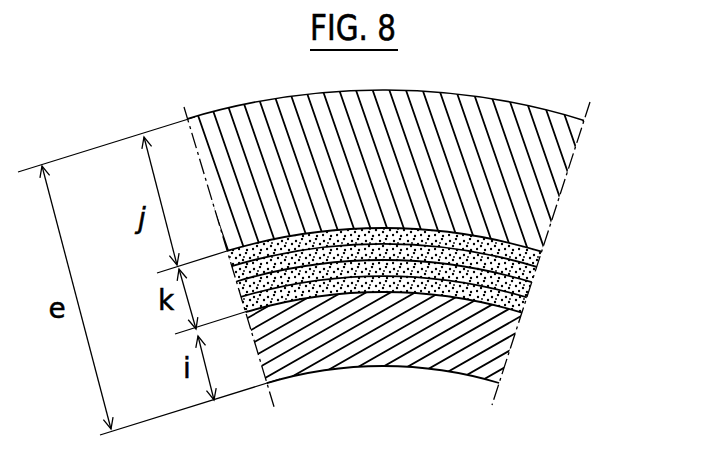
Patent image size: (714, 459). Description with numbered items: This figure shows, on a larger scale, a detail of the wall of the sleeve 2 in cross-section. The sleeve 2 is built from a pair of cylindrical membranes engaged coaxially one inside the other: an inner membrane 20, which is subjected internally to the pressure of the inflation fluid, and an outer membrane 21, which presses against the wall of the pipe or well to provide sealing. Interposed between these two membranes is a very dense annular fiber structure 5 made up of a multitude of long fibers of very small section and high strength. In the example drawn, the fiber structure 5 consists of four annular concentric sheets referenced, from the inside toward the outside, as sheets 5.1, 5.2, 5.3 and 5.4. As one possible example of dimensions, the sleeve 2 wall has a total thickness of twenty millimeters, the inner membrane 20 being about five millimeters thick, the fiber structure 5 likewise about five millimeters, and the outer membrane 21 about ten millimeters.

The sleeve 2 is at (543, 96).
The outer membrane 21 is at (528, 168).
The annular fiber structure 5 is at (441, 287).
The annular concentric sheet 5.4 is at (543, 253).
The annular concentric sheet 5.3 is at (522, 270).
The annular concentric sheet 5.2 is at (525, 292).
The annular concentric sheet 5.1 is at (421, 317).
The inner membrane 20 is at (488, 335).